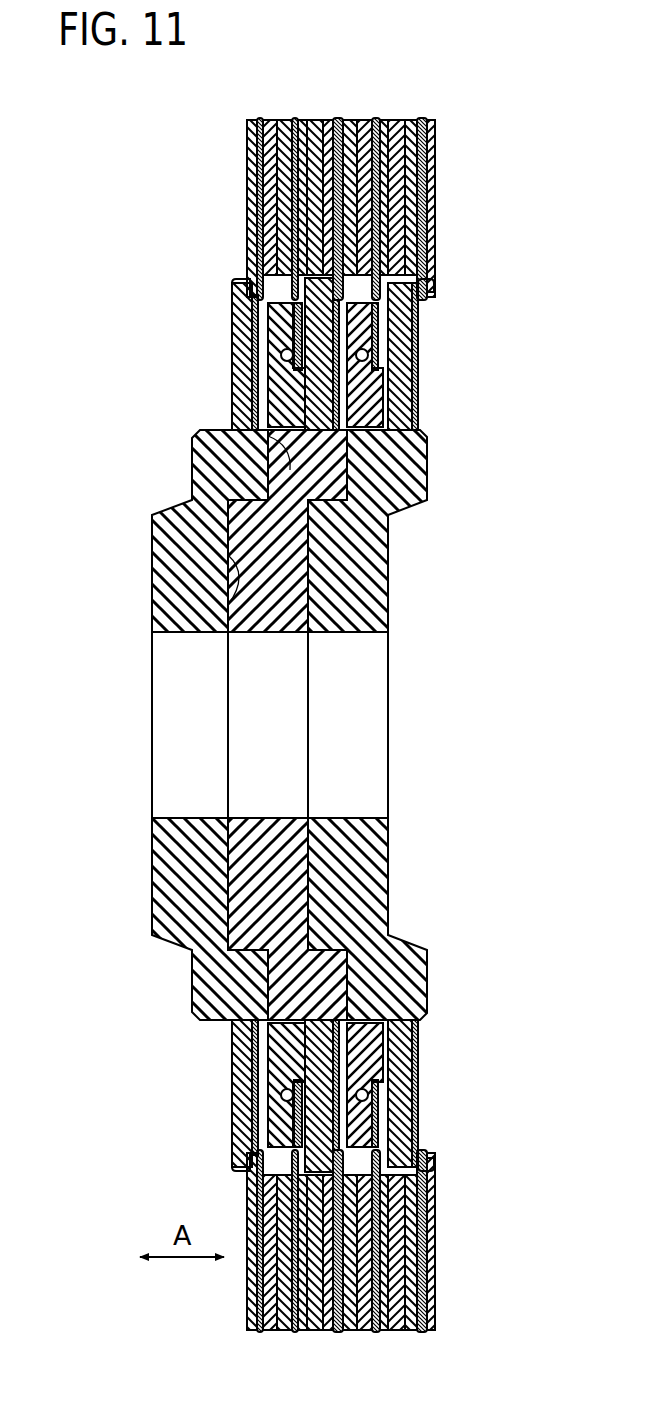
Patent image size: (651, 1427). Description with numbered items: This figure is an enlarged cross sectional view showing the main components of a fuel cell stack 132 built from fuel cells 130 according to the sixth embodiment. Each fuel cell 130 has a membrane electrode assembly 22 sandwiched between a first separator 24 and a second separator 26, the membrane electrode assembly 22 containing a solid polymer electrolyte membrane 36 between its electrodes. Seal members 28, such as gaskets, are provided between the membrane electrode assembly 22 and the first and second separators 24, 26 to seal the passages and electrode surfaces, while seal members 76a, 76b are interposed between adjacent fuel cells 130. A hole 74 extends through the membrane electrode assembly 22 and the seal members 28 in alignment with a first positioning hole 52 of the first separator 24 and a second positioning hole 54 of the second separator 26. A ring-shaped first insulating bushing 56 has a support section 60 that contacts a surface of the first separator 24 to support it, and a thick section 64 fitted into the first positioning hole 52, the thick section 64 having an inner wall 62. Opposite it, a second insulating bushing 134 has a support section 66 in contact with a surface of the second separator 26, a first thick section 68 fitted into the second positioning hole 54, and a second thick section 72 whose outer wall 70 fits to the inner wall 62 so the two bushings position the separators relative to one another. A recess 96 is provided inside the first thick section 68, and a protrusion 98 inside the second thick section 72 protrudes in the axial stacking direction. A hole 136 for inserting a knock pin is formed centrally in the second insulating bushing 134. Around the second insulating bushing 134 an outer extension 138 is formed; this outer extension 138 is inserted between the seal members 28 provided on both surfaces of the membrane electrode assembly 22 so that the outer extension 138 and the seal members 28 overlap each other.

The fuel cell 130 is at (378, 54).
The first separator 24 is at (297, 115).
The membrane electrode assembly 22 is at (316, 115).
The second separator 26 is at (340, 115).
The fuel cell stack 132 is at (102, 132).
The seal member 76a is at (268, 157).
The seal member 28 is at (348, 180).
The seal member 76b is at (282, 217).
The solid polymer electrolyte membrane 36 is at (320, 143).
The hole 74 is at (290, 294).
The outer extension 138 is at (233, 1165).
The support section 60 is at (300, 300).
The support section 66 is at (345, 318).
The first insulating bushing 56 is at (285, 372).
The first positioning hole 52 is at (280, 386).
The thick section 64 is at (297, 405).
The outer wall 70 is at (198, 432).
The second thick section 72 is at (240, 452).
The inner wall 62 is at (292, 466).
The first thick section 68 is at (366, 449).
The second positioning hole 54 is at (349, 474).
The protrusion 98 is at (240, 582).
The recess 96 is at (235, 600).
The second insulating bushing 134 is at (392, 597).
The hole 136 is at (188, 818).